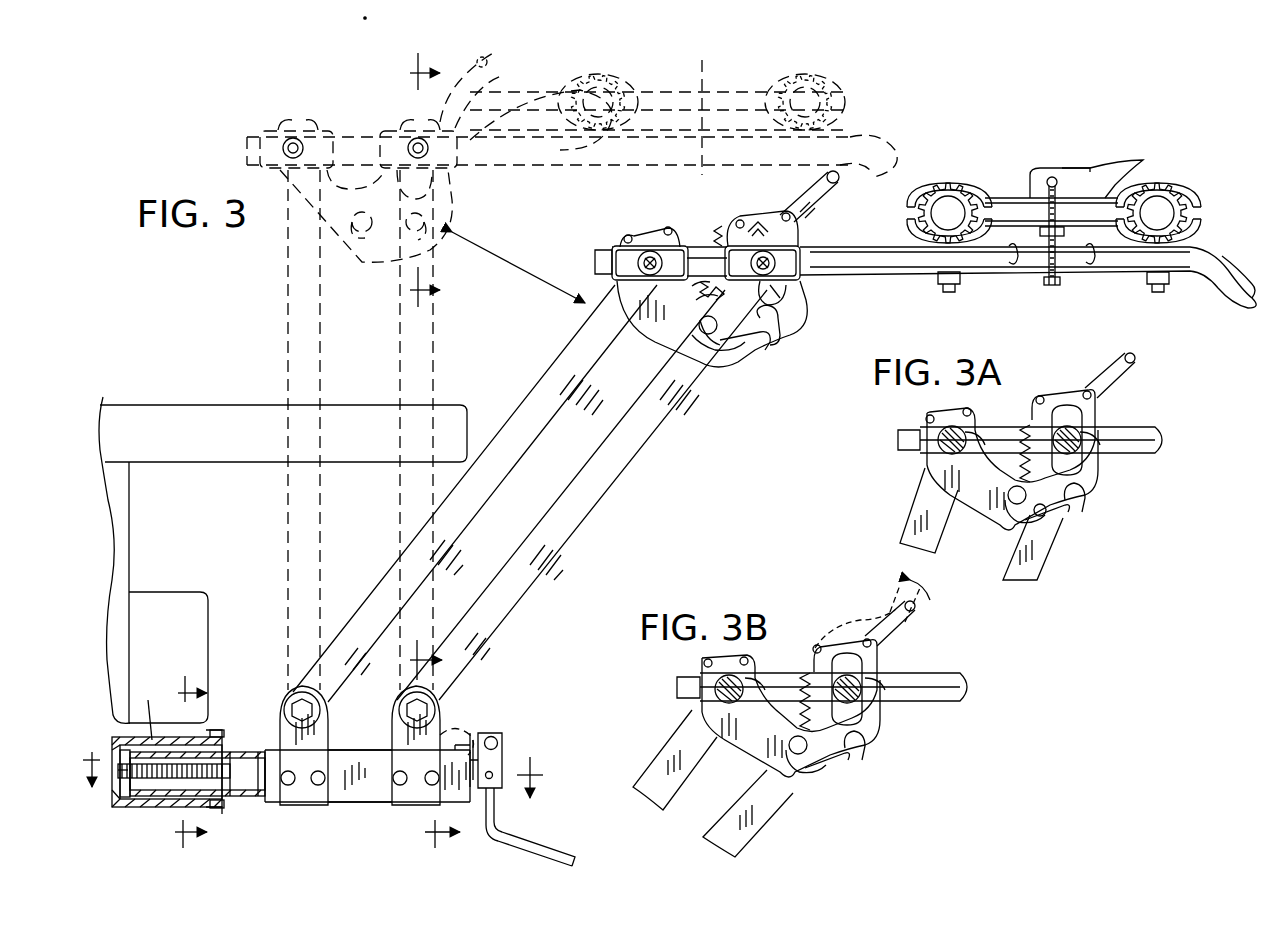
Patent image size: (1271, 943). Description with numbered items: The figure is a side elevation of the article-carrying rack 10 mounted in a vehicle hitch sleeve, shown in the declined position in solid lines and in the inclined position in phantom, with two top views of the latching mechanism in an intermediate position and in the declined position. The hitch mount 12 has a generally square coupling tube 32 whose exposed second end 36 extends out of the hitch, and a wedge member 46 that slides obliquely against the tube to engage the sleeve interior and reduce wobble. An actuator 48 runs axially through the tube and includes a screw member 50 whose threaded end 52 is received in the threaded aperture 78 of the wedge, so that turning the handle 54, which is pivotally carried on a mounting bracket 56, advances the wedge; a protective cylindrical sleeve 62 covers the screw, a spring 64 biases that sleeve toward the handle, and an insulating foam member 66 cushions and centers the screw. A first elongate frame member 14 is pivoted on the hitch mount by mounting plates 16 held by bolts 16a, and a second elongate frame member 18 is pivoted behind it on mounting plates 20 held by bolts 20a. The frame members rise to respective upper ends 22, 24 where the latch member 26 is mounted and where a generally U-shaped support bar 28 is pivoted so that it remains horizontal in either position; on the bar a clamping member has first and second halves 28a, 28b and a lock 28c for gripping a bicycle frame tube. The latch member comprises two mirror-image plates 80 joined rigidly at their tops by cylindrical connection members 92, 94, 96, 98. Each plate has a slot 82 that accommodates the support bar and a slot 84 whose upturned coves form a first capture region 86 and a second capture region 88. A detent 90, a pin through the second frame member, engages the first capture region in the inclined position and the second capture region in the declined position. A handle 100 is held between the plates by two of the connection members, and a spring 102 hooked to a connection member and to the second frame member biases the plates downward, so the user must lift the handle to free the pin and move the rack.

In FIG. 3, the rack 10 is at (205, 131).
In FIG. 3, the hitch mount 12 is at (243, 804).
In FIG. 3, the first elongate frame member 14 is at (558, 348).
In FIG. 3A, the first elongate frame member 14 is at (905, 525).
In FIG. 3B, the first elongate frame member 14 is at (662, 724).
In FIG. 3, the mounting plates 16 is at (296, 716).
In FIG. 3, the bolts 16a is at (320, 786).
In FIG. 3, the second elongate frame member 18 is at (630, 460).
In FIG. 3A, the second elongate frame member 18 is at (1040, 575).
In FIG. 3B, the second elongate frame member 18 is at (760, 835).
In FIG. 3, the mounting plates 20 is at (430, 735).
In FIG. 3, the bolts 20a is at (432, 786).
In FIG. 3, the upper end 22 is at (641, 222).
In FIG. 3, the upper end 24 is at (763, 208).
In FIG. 3, the latch member 26 is at (820, 218).
In FIG. 3A, the latch member 26 is at (1062, 383).
In FIG. 3B, the latch member 26 is at (826, 618).
In FIG. 3, the support bar 28 is at (862, 118).
In FIG. 3A, the support bar 28 is at (1150, 428).
In FIG. 3B, the support bar 28 is at (943, 673).
In FIG. 3, the first half 28a is at (955, 182).
In FIG. 3, the second half 28b is at (1008, 228).
In FIG. 3, the lock 28c is at (1095, 168).
In FIG. 3, the coupling tube 32 is at (352, 750).
In FIG. 3, the second end 36 is at (463, 740).
In FIG. 3, the wedge member 46 is at (127, 797).
In FIG. 3, the actuator 48 is at (512, 738).
In FIG. 3, the screw member 50 is at (236, 754).
In FIG. 3, the threaded end 52 is at (115, 740).
In FIG. 3, the handle 54 is at (540, 860).
In FIG. 3, the mounting bracket 56 is at (500, 760).
In FIG. 3, the protective cylindrical sleeve 62 is at (254, 760).
In FIG. 3, the spring 64 is at (150, 800).
In FIG. 3, the insulating foam member 66 is at (218, 810).
In FIG. 3, the aperture 78 is at (125, 782).
In FIG. 3, the plates 80 is at (805, 325).
In FIG. 3A, the plates 80 is at (1092, 480).
In FIG. 3B, the plates 80 is at (862, 775).
In FIG. 3, the slot 82 is at (796, 292).
In FIG. 3A, the slot 82 is at (1085, 460).
In FIG. 3B, the slot 82 is at (862, 713).
In FIG. 3, the slot 84 is at (760, 346).
In FIG. 3A, the slot 84 is at (1068, 512).
In FIG. 3B, the slot 84 is at (848, 770).
In FIG. 3, the first capture region 86 is at (790, 345).
In FIG. 3A, the first capture region 86 is at (1080, 505).
In FIG. 3B, the first capture region 86 is at (865, 750).
In FIG. 3, the second capture region 88 is at (712, 332).
In FIG. 3A, the second capture region 88 is at (1010, 502).
In FIG. 3B, the second capture region 88 is at (800, 748).
In FIG. 3, the detent 90 is at (690, 340).
In FIG. 3A, the detent 90 is at (1010, 520).
In FIG. 3B, the detent 90 is at (775, 770).
In FIG. 3, the connection member 92 is at (628, 238).
In FIG. 3, the connection member 94 is at (668, 232).
In FIG. 3, the connection member 96 is at (738, 225).
In FIG. 3, the connection member 98 is at (786, 216).
In FIG. 3, the handle 100 is at (843, 172).
In FIG. 3A, the handle 100 is at (1125, 357).
In FIG. 3B, the handle 100 is at (915, 606).
In FIG. 3, the spring 102 is at (708, 286).
In FIG. 3A, the spring 102 is at (1022, 420).
In FIG. 3B, the spring 102 is at (800, 655).